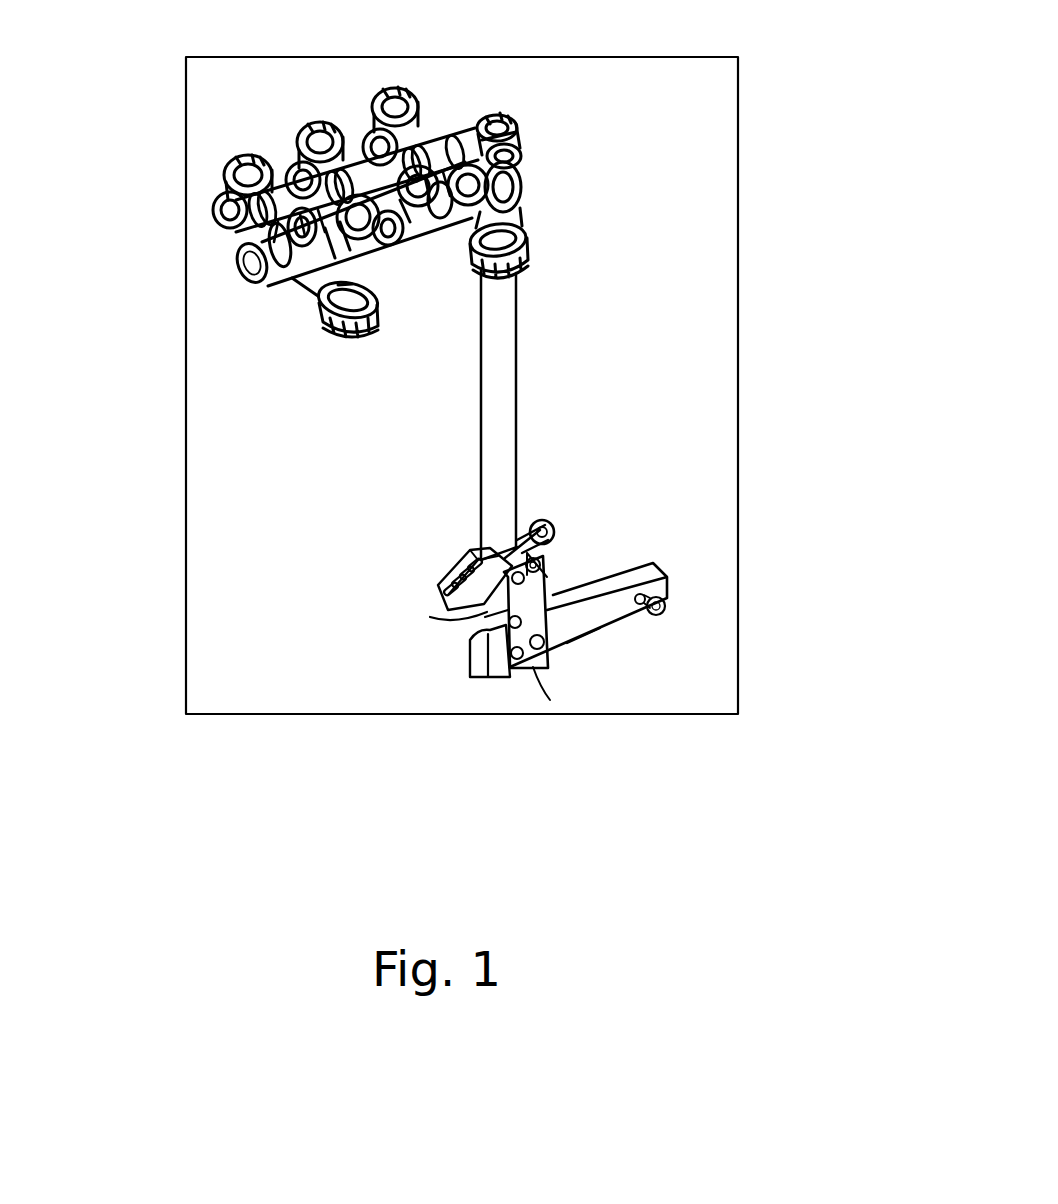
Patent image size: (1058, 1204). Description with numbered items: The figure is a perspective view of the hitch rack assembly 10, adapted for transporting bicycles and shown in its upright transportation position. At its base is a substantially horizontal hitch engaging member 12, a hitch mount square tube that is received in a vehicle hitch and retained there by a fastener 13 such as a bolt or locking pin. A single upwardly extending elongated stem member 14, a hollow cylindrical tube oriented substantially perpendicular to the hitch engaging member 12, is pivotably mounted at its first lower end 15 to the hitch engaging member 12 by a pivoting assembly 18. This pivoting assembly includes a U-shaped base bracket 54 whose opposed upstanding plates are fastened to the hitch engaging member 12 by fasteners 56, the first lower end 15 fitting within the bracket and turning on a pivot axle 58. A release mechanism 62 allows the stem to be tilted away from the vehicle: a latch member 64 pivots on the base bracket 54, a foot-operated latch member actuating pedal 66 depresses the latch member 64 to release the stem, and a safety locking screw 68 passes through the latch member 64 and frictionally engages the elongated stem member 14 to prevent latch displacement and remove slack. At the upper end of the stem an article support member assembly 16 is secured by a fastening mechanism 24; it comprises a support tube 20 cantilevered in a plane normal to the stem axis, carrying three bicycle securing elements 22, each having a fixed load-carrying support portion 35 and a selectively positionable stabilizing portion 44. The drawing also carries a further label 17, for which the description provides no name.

The hitch rack assembly 10 is at (680, 163).
The hitch engaging member 12 is at (592, 620).
The fastener 13 is at (673, 593).
The elongated stem member 14 is at (518, 397).
The first lower end 15 is at (430, 617).
The article support member assembly 16 is at (462, 122).
The tightening knob 17 is at (523, 212).
The pivoting assembly 18 is at (553, 580).
The support tube 20 is at (242, 263).
The bicycle securing element 22 is at (377, 87).
The fastening mechanism 24 is at (522, 115).
The load-carrying support portion 35 is at (240, 232).
The stabilizing portion 44 is at (300, 297).
The base bracket 54 is at (567, 643).
The fasteners 56 is at (550, 700).
The pivot axle 58 is at (473, 628).
The release mechanism 62 is at (528, 517).
The latch member 64 is at (547, 553).
The latch member actuating pedal 66 is at (440, 578).
The safety locking screw 68 is at (546, 520).